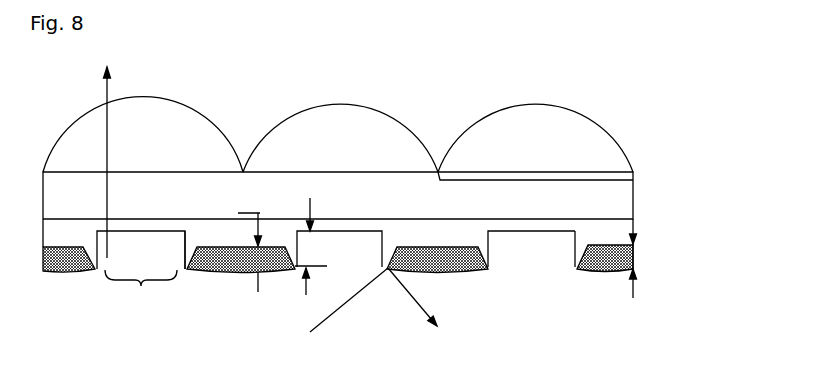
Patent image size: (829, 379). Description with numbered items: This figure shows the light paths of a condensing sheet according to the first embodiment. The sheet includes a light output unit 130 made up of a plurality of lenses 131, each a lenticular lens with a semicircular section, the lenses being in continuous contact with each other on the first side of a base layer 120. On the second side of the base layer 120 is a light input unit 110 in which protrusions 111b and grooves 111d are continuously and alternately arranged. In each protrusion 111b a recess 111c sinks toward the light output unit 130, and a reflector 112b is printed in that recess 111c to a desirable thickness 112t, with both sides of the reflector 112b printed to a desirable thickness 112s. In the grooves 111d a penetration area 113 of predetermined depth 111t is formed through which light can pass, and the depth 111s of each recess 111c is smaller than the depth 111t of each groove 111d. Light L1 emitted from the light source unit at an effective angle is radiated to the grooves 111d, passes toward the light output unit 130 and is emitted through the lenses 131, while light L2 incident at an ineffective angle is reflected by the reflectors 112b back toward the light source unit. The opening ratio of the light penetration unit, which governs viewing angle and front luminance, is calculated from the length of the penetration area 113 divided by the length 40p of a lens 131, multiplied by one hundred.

The light incident at an effective angle L1 is at (110, 96).
The light incident at an ineffective angle L2 is at (342, 312).
The light output unit 130 is at (376, 127).
The lens 131 is at (565, 104).
The base layer 120 is at (634, 191).
The length of lens 40p is at (548, 185).
The light input unit 110 is at (403, 277).
The depth of recess 111s is at (212, 246).
The depth of groove 111t is at (312, 210).
The protrusion 111b is at (490, 238).
The recess 111c is at (613, 268).
The groove 111d is at (570, 237).
The thickness of both sides of reflector 112s is at (203, 232).
The reflector 112b is at (473, 272).
The thickness of reflector 112t is at (634, 258).
The penetration area 113 is at (141, 286).